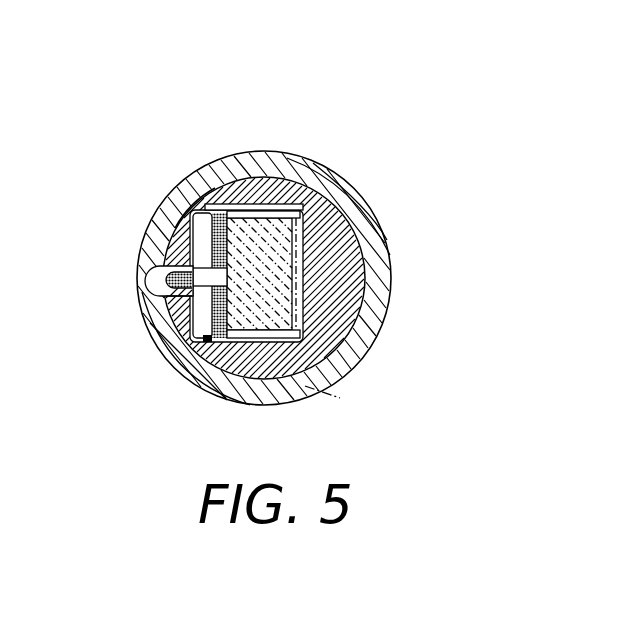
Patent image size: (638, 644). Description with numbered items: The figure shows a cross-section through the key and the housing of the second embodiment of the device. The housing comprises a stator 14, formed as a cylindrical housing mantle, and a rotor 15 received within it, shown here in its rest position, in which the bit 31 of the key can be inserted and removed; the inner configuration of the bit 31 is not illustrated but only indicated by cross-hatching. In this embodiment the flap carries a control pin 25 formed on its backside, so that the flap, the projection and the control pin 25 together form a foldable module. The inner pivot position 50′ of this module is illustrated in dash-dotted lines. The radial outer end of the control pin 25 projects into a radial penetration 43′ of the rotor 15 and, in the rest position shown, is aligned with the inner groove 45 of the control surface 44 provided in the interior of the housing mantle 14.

The stator 14 is at (367, 320).
The rotor 15 is at (345, 253).
The radial penetration 43′ is at (188, 208).
The control surface 44 is at (343, 217).
The inner groove 45 is at (157, 275).
The control pin 25 is at (152, 296).
The inner pivot position 50′ is at (183, 366).
The bit 31 is at (340, 398).